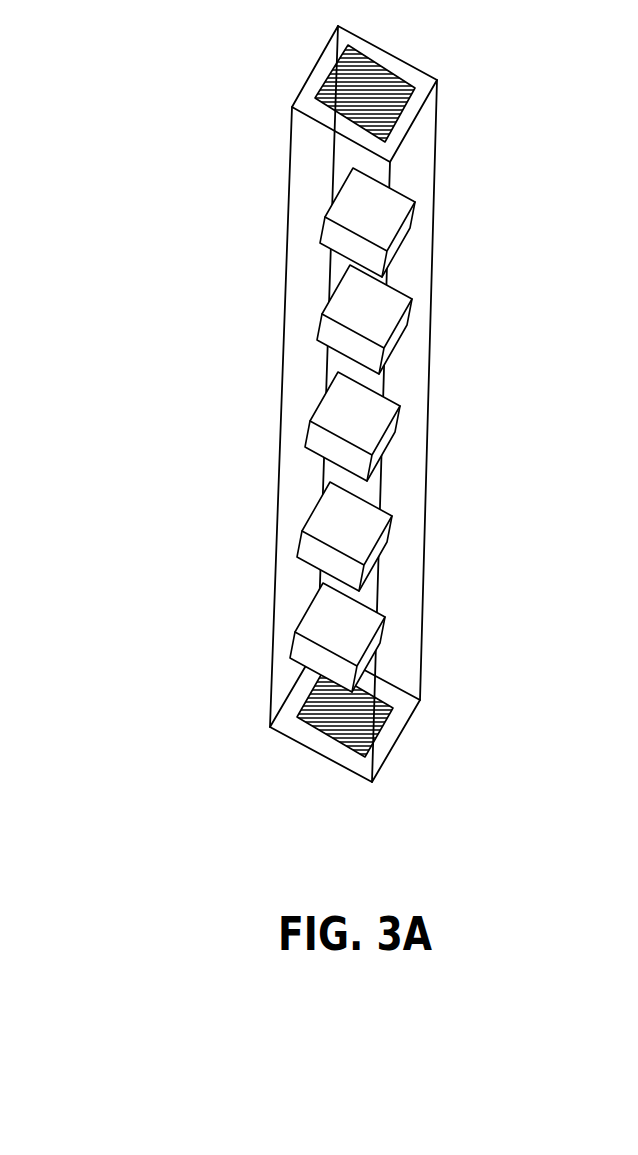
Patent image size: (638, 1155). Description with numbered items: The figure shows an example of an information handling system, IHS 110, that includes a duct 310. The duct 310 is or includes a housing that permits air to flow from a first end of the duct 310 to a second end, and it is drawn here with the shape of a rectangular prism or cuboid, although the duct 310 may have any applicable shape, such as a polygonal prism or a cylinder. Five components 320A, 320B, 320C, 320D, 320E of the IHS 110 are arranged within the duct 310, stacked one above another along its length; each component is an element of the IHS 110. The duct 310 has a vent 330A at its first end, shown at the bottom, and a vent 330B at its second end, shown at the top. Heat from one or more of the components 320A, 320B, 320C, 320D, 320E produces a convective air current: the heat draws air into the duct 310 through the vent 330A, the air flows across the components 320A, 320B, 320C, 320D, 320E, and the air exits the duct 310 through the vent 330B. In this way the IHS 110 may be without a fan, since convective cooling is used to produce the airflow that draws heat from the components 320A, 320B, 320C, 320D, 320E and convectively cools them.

The information handling system 110 is at (244, 410).
The duct 310 is at (280, 417).
The component 320A is at (312, 602).
The component 320B is at (320, 503).
The component 320C is at (325, 392).
The component 320D is at (340, 288).
The component 320E is at (340, 193).
The vent 330A is at (352, 752).
The vent 330B is at (332, 72).